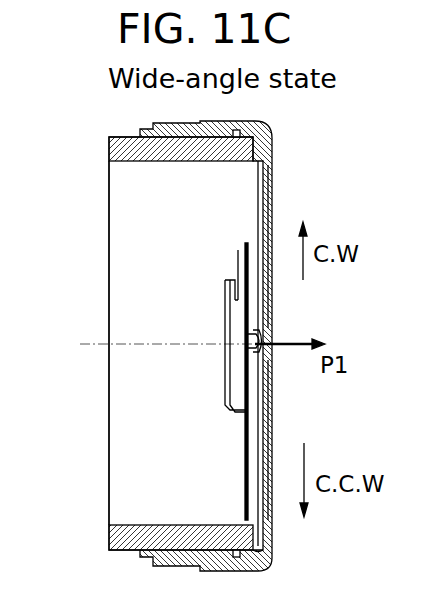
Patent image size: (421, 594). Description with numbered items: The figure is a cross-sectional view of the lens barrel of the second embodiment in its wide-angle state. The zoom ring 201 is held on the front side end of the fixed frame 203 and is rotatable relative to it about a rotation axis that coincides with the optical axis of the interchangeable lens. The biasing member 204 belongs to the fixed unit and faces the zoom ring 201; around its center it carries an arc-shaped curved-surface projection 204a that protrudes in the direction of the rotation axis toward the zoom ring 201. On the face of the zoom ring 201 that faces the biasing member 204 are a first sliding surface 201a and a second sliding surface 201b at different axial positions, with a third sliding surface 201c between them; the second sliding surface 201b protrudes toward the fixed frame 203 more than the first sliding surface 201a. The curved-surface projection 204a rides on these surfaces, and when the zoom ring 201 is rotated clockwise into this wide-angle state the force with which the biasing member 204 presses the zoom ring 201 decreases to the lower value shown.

The zoom ring 201 is at (272, 133).
The first sliding surface 201a is at (266, 393).
The second sliding surface 201b is at (268, 297).
The third sliding surface 201c is at (262, 338).
The fixed frame 203 is at (115, 150).
The biasing member 204 is at (246, 250).
The curved-surface projection 204a is at (246, 342).